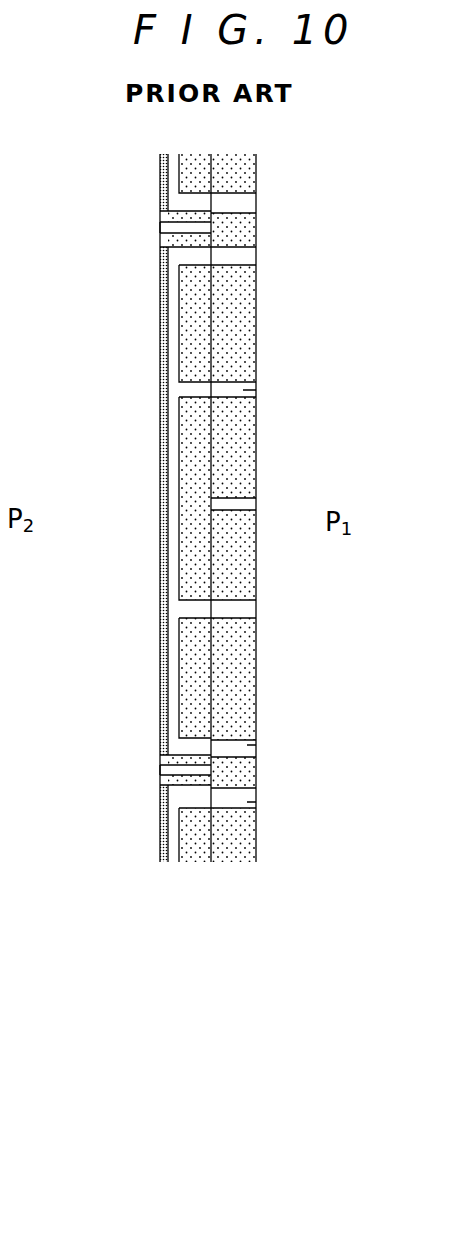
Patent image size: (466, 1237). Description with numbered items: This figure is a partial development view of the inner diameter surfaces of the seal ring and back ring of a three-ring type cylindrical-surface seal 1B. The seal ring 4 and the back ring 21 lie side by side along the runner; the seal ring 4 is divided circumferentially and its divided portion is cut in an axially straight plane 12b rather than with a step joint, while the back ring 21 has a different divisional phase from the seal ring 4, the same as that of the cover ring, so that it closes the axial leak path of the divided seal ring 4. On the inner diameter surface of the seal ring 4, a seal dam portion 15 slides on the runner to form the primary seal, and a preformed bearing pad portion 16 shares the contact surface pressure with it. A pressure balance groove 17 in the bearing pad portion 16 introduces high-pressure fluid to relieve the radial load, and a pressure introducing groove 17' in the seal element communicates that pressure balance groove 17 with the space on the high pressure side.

The cylindrical-surface seal 1B is at (278, 272).
The seal ring 4 is at (160, 507).
The seal dam portion 15 is at (160, 432).
The bearing pad portion 16 is at (190, 320).
The pressure balance groove 17 is at (137, 515).
The pressure introducing groove 17' is at (307, 595).
The axially straight plane 12b is at (182, 767).
The back ring 21 is at (258, 332).